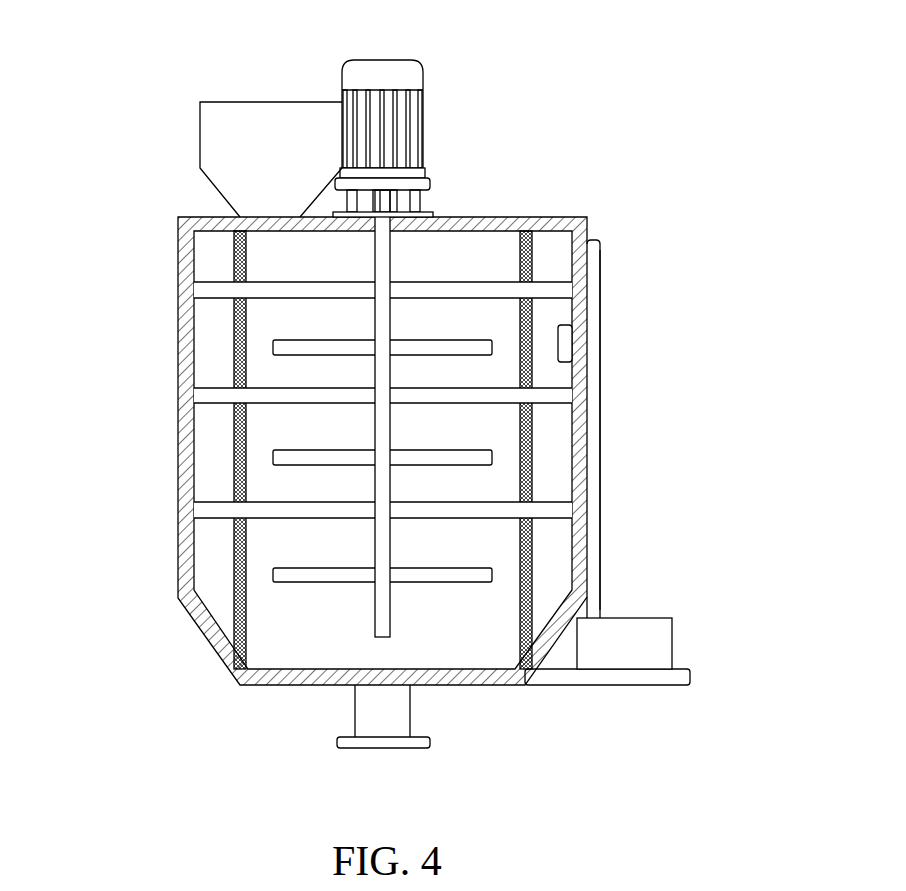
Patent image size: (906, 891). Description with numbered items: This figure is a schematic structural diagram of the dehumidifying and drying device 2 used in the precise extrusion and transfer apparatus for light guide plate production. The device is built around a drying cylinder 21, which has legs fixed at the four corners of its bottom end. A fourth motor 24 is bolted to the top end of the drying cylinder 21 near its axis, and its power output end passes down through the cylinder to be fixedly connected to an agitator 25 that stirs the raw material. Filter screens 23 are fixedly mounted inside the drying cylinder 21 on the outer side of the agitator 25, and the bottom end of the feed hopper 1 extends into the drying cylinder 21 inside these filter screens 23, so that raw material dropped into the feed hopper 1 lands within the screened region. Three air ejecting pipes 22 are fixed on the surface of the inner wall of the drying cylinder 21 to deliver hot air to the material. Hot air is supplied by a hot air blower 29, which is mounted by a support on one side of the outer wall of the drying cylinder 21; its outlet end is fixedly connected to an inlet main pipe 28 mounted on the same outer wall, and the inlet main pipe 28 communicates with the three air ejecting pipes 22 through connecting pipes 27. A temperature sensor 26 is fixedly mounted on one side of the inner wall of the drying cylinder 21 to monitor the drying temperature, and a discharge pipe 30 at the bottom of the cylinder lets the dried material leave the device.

The feed hopper 1 is at (242, 110).
The dehumidifying and drying device 2 is at (316, 451).
The drying cylinder 21 is at (316, 451).
The air ejecting pipe 22 is at (320, 361).
The filter screen 23 is at (318, 397).
The fourth motor 24 is at (428, 318).
The agitator 25 is at (432, 342).
The temperature sensor 26 is at (629, 254).
The connecting pipe 27 is at (657, 430).
The inlet main pipe 28 is at (627, 462).
The hot air blower 29 is at (676, 560).
The discharge pipe 30 is at (421, 735).